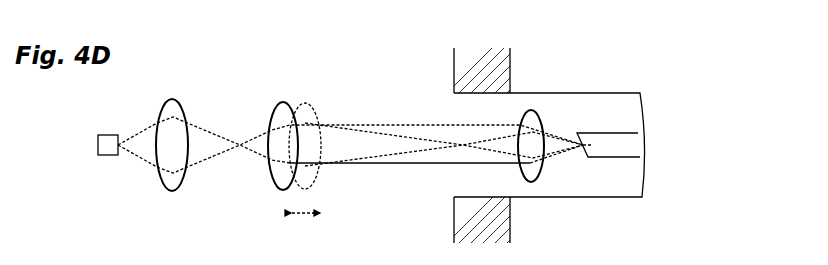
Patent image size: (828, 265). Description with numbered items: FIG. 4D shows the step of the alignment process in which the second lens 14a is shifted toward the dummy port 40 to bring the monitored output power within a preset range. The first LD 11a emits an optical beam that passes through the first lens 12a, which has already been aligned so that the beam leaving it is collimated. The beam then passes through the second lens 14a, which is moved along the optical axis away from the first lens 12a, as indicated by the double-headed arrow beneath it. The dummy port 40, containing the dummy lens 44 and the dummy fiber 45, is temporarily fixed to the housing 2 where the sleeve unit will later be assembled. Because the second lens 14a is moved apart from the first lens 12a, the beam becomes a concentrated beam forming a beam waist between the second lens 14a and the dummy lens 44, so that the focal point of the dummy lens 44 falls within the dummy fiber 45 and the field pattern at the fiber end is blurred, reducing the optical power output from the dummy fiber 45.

The first LD 11a is at (108, 142).
The first lens 12a is at (174, 106).
The second lens 14a is at (285, 110).
The housing 2 is at (475, 65).
The dummy port 40 is at (660, 43).
The dummy lens 44 is at (532, 109).
The dummy fiber 45 is at (600, 137).